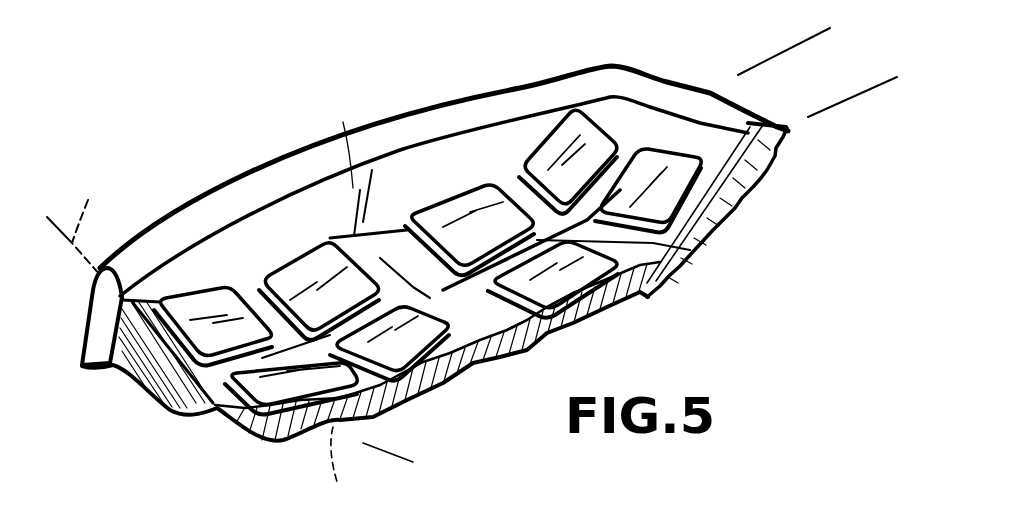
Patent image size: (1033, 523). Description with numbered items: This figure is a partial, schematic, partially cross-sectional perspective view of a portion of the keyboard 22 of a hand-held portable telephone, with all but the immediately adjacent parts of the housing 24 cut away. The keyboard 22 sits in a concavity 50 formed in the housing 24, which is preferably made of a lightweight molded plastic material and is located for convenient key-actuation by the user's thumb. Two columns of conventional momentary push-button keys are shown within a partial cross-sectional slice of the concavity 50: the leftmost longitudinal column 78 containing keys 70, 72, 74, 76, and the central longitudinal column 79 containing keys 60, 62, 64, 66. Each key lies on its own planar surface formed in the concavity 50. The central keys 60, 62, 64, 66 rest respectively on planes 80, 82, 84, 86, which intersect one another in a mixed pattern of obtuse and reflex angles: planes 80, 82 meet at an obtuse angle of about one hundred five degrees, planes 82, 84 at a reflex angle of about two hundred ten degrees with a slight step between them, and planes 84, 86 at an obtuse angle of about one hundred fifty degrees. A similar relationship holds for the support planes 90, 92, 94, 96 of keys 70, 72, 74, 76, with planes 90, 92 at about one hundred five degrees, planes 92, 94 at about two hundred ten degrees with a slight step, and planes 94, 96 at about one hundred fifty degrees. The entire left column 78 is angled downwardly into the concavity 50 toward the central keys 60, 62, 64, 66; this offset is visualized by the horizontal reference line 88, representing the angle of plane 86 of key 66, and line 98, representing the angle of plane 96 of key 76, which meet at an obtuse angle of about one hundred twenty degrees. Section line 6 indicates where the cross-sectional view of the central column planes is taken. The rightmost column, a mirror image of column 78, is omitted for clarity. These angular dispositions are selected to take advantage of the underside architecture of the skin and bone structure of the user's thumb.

The section line 6- 6 is at (748, 52).
The keyboard 22 is at (241, 164).
The housing 24 is at (88, 322).
The concavity 50 is at (334, 138).
The key 60 is at (690, 168).
The key 62 is at (642, 290).
The key 64 is at (448, 372).
The key 66 is at (390, 400).
The key 70 is at (573, 107).
The key 72 is at (473, 197).
The key 74 is at (303, 270).
The key 76 is at (180, 297).
The leftmost column 78 is at (645, 95).
The central longitudinal column 79 is at (744, 92).
The planar surface 80 is at (692, 251).
The planar surface 82 is at (538, 313).
The planar surface 84 is at (520, 348).
The planar surface 86 is at (247, 403).
The horizontal reference line 88 is at (372, 467).
The support plane 90 is at (512, 183).
The support plane 92 is at (404, 231).
The support plane 94 is at (357, 243).
The support plane 96 is at (183, 352).
The line 98 is at (73, 222).